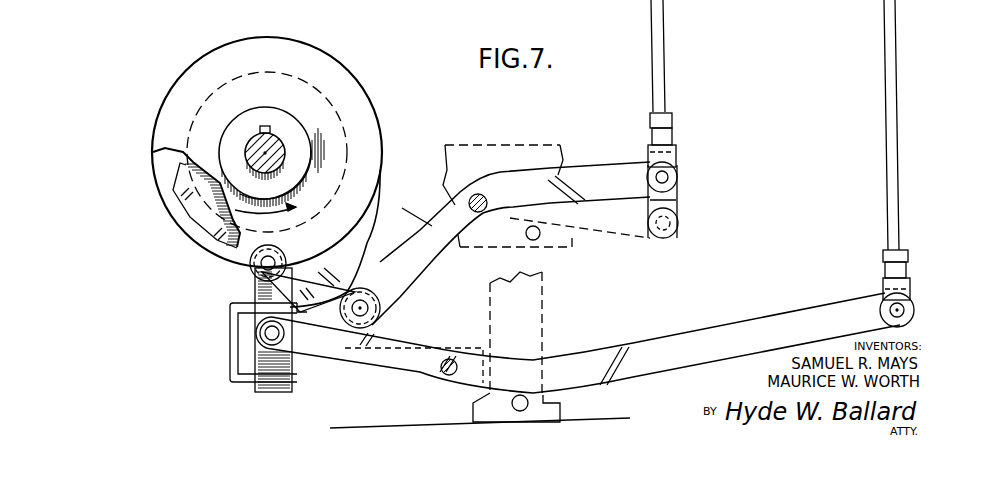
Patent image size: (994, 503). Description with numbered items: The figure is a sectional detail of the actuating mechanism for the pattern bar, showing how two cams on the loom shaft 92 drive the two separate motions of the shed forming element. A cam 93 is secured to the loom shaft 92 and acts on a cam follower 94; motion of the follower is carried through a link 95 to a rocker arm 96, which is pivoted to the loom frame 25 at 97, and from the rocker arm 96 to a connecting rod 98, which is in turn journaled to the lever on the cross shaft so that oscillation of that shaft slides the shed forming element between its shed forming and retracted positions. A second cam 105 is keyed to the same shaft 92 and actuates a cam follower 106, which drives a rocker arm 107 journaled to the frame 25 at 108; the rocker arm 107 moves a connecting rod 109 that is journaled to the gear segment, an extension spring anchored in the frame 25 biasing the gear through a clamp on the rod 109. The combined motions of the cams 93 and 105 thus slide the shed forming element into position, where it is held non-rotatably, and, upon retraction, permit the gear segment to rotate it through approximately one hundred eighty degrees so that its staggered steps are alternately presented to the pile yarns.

The loom frame 25 is at (478, 145).
The loom shaft 92 is at (272, 138).
The cam 93 is at (208, 228).
The cam follower 94 is at (250, 275).
The link 95 is at (272, 380).
The rocker arm 96 is at (705, 333).
The pivot 97 is at (452, 357).
The connecting rod 98 is at (889, 118).
The cam 105 is at (362, 250).
The cam follower 106 is at (387, 316).
The rocker arm 107 is at (583, 172).
The journal 108 is at (477, 194).
The connecting rod 109 is at (664, 78).